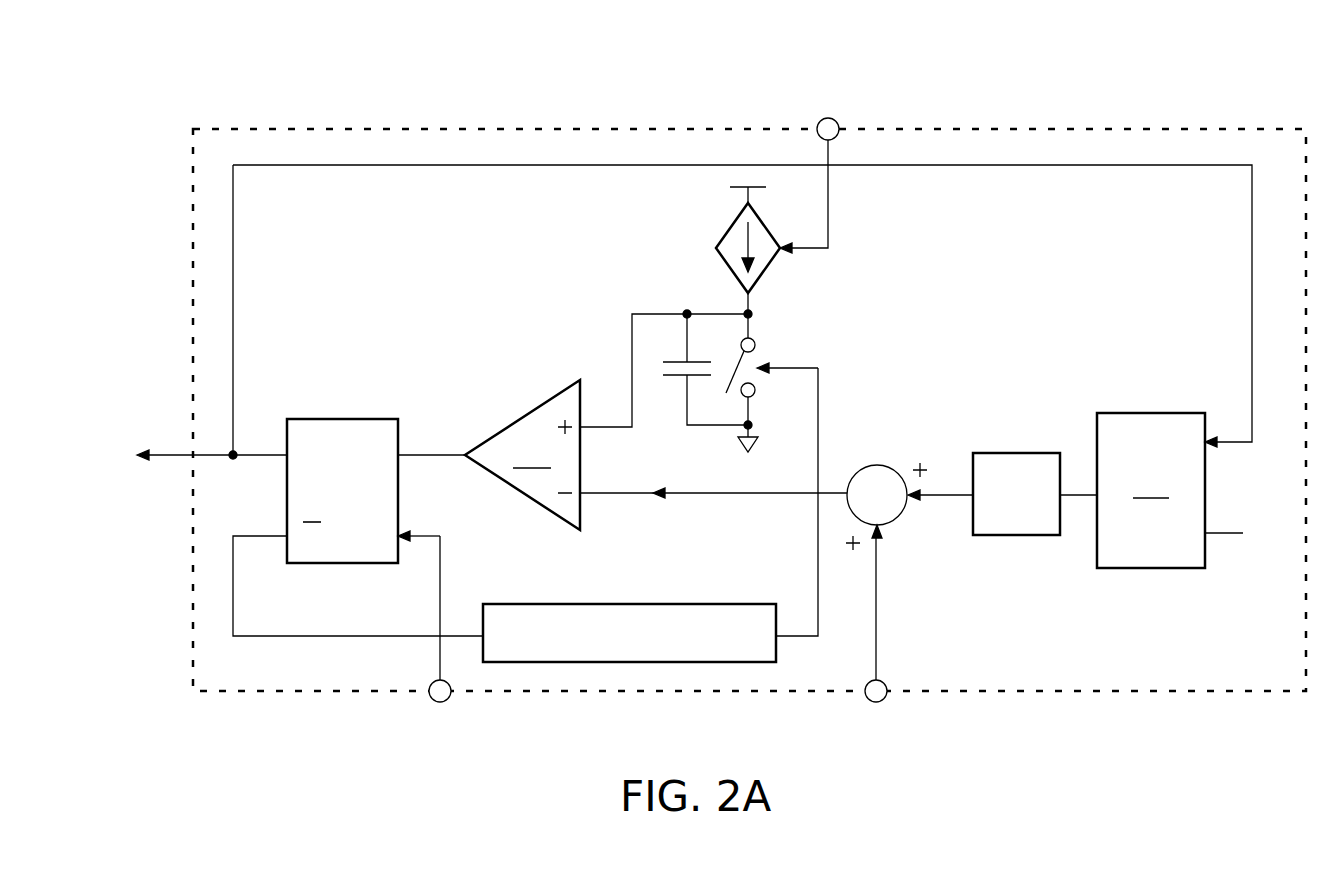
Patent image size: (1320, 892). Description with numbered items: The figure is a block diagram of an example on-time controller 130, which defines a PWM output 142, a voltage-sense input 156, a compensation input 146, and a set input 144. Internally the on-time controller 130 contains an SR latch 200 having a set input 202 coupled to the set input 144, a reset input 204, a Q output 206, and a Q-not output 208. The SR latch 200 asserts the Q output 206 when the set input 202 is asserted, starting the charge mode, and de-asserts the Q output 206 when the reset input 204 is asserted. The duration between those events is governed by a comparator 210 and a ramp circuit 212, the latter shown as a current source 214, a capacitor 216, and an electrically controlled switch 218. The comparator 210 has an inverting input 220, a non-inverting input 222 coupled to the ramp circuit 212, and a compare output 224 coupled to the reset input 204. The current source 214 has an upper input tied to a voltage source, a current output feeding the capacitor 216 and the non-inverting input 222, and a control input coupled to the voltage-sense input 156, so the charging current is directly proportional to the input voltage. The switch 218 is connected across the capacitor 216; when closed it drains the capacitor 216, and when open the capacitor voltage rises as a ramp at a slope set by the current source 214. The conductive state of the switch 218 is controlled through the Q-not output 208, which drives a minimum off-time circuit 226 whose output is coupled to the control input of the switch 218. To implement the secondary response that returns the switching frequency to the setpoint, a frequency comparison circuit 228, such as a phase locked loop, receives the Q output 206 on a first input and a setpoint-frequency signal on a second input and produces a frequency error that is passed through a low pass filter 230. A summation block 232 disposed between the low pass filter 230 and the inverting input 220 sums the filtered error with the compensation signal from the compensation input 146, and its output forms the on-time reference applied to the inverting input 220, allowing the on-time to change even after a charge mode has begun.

The on-time controller 130 is at (252, 128).
The PWM output 142 is at (168, 450).
The set input 144 is at (440, 703).
The compensation input 146 is at (876, 703).
The voltage-sense input 156 is at (828, 117).
The SR latch 200 is at (318, 419).
The set input 202 is at (400, 528).
The reset input 204 is at (402, 450).
The Q output 206 is at (284, 450).
The Q-not output 208 is at (285, 530).
The comparator 210 is at (622, 433).
The ramp circuit 212 is at (668, 262).
The current source 214 is at (766, 275).
The capacitor 216 is at (677, 385).
The electrically controlled switch 218 is at (775, 390).
The inverting input 220 is at (587, 505).
The non-inverting input 222 is at (590, 420).
The compare output 224 is at (465, 450).
The minimum off-time circuit 226 is at (715, 603).
The frequency comparison circuit 228 is at (1189, 490).
The low pass filter 230 is at (987, 453).
The summation block 232 is at (877, 465).